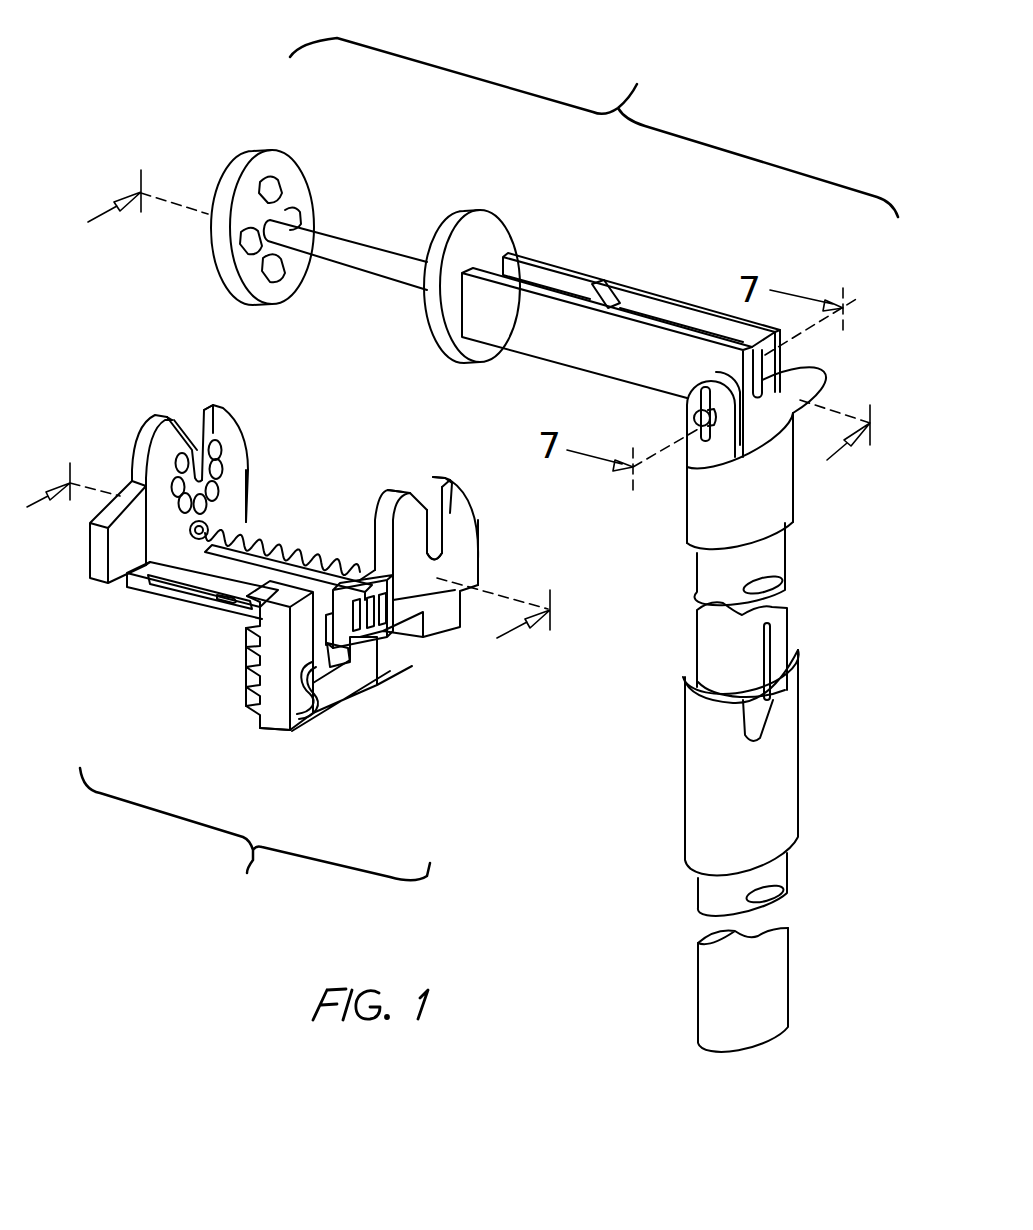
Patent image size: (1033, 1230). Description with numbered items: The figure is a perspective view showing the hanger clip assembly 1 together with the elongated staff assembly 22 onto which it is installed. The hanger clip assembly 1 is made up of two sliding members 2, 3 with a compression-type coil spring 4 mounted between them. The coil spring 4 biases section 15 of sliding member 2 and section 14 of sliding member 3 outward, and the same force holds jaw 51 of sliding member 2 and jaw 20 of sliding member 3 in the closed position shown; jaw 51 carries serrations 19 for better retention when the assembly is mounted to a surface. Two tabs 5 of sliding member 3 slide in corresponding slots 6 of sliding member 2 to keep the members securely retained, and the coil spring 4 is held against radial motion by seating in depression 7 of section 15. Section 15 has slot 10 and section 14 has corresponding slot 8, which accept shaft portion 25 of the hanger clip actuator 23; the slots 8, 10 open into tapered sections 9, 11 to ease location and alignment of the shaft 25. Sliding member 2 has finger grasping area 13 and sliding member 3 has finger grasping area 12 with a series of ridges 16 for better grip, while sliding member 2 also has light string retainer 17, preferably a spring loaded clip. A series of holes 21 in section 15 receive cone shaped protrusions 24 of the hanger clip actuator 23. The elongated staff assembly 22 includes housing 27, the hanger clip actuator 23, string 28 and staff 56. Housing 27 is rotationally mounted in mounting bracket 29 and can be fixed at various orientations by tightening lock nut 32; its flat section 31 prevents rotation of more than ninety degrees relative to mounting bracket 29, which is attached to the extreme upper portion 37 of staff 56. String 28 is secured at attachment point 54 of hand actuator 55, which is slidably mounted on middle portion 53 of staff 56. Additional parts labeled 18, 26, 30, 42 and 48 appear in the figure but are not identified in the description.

The hanger clip assembly 1 is at (255, 837).
The sliding member 2 is at (232, 422).
The sliding member 3 is at (468, 493).
The compression-type coil spring 4 is at (207, 552).
The tabs 5 is at (215, 599).
The slots 6 is at (168, 590).
The depression 7 is at (205, 524).
The slot 8 is at (441, 536).
The tapered section 9 is at (453, 496).
The slot 10 is at (198, 478).
The tapered section 11 is at (208, 412).
The finger grasping area 12 is at (380, 644).
The finger grasping area 13 is at (97, 583).
The section 14 is at (479, 518).
The section 15 is at (247, 441).
The ridges 16 is at (455, 622).
The light string retainer 17 is at (340, 697).
The bottom edge 18 is at (383, 683).
The serrations 19 is at (253, 707).
The jaw 20 is at (247, 657).
The holes 21 is at (176, 462).
The elongated staff assembly 22 is at (594, 127).
The hanger clip actuator 23 is at (272, 150).
The cone shaped protrusions 24 is at (273, 184).
The shaft portion 25 is at (340, 223).
The second disk 26 is at (496, 213).
The housing 27 is at (568, 259).
The string 28 is at (766, 389).
The mounting bracket 29 is at (795, 478).
The slot 30 is at (703, 390).
The flat section 31 is at (790, 346).
The lock nut 32 is at (696, 424).
The extreme upper portion 37 is at (696, 564).
The cross member 42 is at (600, 291).
The spring 48 is at (255, 541).
The jaw 51 is at (270, 732).
The middle portion 53 is at (788, 614).
The attachment point 54 is at (776, 691).
The hand actuator 55 is at (797, 746).
The staff 56 is at (790, 966).